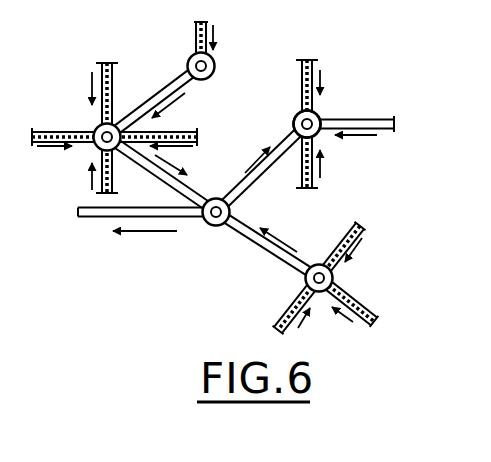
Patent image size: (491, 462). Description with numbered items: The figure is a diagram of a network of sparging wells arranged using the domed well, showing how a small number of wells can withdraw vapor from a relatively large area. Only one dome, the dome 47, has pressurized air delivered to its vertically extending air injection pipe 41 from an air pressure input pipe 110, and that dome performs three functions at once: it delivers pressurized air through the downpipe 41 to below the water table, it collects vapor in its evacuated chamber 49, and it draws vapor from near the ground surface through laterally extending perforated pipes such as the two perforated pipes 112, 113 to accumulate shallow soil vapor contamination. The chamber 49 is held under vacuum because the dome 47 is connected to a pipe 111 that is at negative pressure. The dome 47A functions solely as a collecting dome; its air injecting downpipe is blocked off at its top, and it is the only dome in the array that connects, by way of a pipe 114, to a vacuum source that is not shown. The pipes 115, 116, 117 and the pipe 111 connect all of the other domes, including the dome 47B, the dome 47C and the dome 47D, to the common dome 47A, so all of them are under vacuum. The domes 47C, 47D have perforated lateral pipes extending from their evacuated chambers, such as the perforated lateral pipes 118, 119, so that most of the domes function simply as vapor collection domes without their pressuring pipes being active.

The air injection pipe 41 is at (300, 112).
The dome 47 is at (322, 112).
The dome 47A is at (228, 226).
The dome 47B is at (218, 60).
The dome 47C is at (93, 150).
The dome 47D is at (321, 298).
The evacuated chamber 49 is at (295, 128).
The air pressure input pipe 110 is at (391, 130).
The pipe 111 is at (247, 189).
The perforated pipe 112 is at (315, 68).
The perforated pipe 113 is at (312, 178).
The pipe 114 is at (106, 221).
The pipe 115 is at (146, 97).
The pipe 116 is at (176, 190).
The pipe 117 is at (296, 265).
The perforated lateral pipe 118 is at (94, 128).
The perforated lateral pipe 119 is at (340, 266).